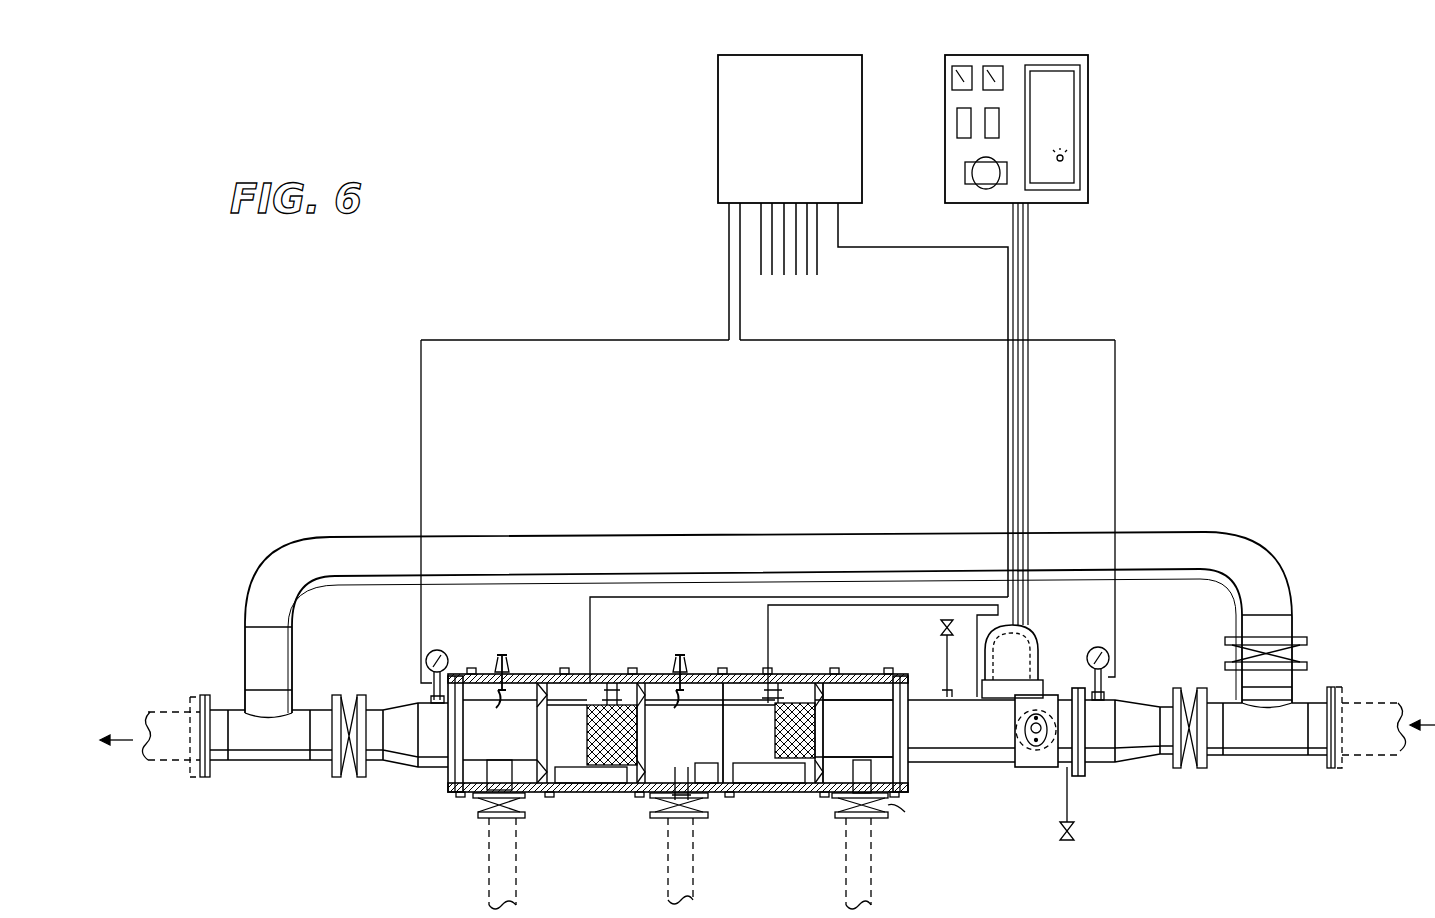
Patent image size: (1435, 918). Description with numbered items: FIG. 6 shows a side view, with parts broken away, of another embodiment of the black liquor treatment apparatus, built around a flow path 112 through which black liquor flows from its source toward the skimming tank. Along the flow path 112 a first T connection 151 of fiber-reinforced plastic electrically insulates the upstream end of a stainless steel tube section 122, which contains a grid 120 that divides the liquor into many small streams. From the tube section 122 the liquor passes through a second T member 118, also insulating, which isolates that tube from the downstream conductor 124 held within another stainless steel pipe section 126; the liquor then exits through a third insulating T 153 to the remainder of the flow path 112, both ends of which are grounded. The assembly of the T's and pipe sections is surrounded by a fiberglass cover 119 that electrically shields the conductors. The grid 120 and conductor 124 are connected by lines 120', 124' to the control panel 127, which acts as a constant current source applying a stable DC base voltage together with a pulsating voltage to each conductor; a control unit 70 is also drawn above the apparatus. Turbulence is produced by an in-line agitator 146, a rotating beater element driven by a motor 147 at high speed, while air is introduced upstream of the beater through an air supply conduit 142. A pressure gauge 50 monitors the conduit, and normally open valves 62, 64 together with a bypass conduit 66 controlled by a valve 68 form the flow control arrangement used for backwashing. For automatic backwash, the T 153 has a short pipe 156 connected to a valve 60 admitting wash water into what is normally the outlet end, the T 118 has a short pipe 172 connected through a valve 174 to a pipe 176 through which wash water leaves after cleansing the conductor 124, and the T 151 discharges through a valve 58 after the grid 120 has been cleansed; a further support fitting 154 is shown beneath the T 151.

The control unit 70 is at (732, 156).
The control panel 127 is at (1070, 204).
The bypass conduit 66 is at (503, 547).
The valve 68 is at (1298, 638).
The valve 64 is at (342, 693).
The valve 62 is at (1186, 770).
The flow path 112 is at (322, 762).
The third T 153 is at (477, 740).
The pipe section 126 is at (562, 702).
The conductor 124 is at (591, 693).
The second T member 118 is at (674, 703).
The grid 120 is at (804, 690).
The line 124' is at (799, 593).
The line 120' is at (883, 598).
The fiberglass cover 119 is at (863, 680).
The first T connection 151 is at (870, 712).
The agitator 146 is at (1030, 745).
The motor 147 is at (1020, 653).
The pressure gauge 50 is at (1112, 663).
The air supply conduit 142 is at (1072, 805).
The valve 60 is at (480, 812).
The short pipe 156 is at (513, 790).
The short pipe 172 is at (662, 797).
The valve 174 is at (700, 800).
The pipe 176 is at (695, 875).
The stainless steel tube section 122 is at (753, 773).
The support stand 154 is at (855, 797).
The valve 58 is at (888, 805).